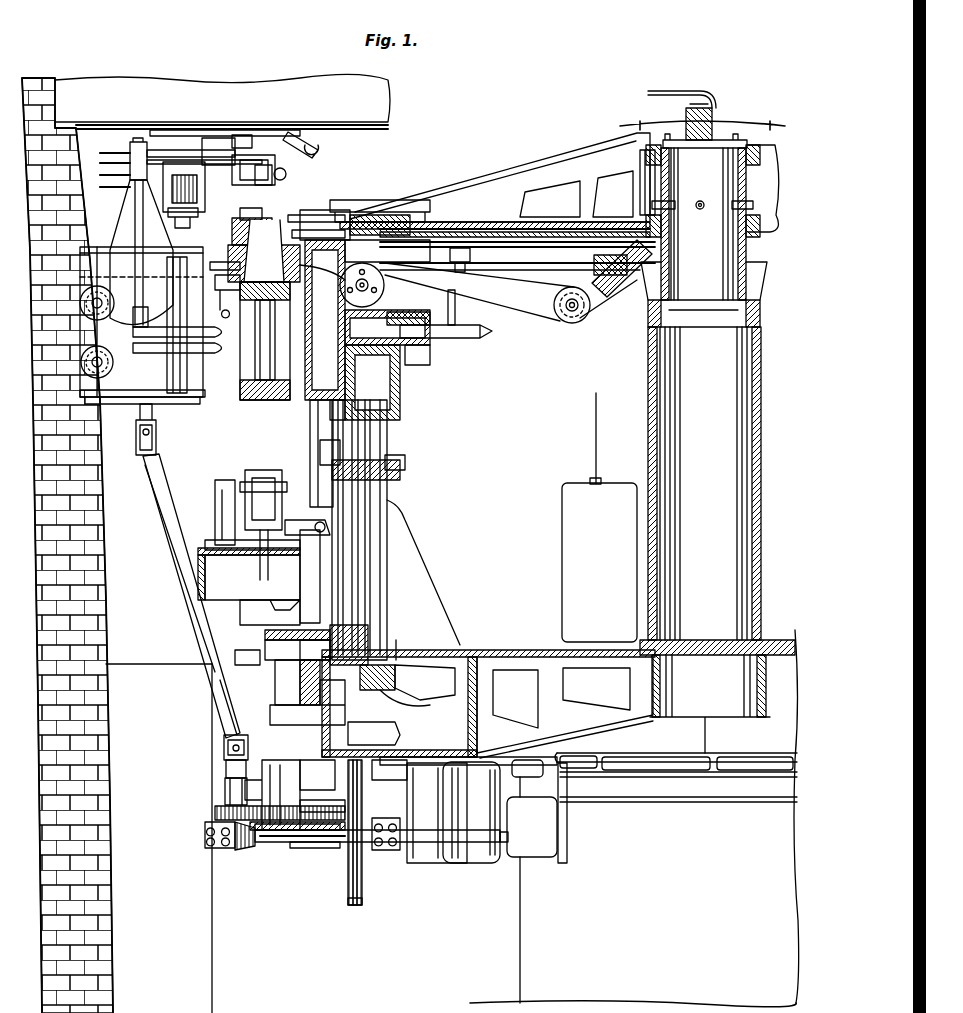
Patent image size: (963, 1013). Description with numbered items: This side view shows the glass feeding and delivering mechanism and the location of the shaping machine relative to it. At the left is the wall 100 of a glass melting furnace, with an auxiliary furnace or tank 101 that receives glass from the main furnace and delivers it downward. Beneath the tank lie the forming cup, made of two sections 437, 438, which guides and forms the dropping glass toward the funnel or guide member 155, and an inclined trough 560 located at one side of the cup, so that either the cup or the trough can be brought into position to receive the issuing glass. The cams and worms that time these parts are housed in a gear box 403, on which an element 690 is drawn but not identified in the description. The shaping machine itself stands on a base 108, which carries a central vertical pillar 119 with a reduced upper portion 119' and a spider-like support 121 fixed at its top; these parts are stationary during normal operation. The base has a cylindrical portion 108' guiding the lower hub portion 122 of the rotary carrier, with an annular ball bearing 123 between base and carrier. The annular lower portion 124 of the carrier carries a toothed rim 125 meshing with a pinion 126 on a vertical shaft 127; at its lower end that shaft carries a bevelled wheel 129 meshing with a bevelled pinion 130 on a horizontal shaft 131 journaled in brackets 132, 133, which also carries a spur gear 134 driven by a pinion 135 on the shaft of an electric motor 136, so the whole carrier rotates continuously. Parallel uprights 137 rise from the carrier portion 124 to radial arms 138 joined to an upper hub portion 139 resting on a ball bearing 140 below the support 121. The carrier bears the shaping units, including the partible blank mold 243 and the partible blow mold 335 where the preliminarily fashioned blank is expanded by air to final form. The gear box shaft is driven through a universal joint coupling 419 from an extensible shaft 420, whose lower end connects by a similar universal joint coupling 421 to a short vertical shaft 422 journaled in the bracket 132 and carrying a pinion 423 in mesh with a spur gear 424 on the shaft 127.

The wall of glass melting furnace 100 is at (105, 925).
The auxiliary furnace or tank 101 is at (222, 101).
The forming cup section 437 is at (290, 172).
The inclined trough 560 is at (245, 195).
The forming cup section 438 is at (195, 238).
The funnel shaped passage 155 is at (260, 228).
The partible blank mold 243 is at (248, 323).
The gear box 403 is at (142, 292).
The handwheel 690 is at (151, 332).
The spider-like support 121 is at (630, 185).
The radial arms 138 is at (532, 263).
The upper hub portion 139 is at (592, 308).
The ball bearing 140 is at (642, 317).
The reduced upper portion of pillar 119' is at (702, 209).
The central vertical pillar 119 is at (704, 483).
The base 108 is at (560, 813).
The cylindrical portion of base 108' is at (422, 715).
The parallel uprights 137 is at (368, 532).
The annular lower portion of carrier 124 is at (352, 650).
The partible blow mold 335 is at (262, 490).
The pinion 126 is at (272, 668).
The vertical shaft 127 is at (275, 688).
The rim 125 is at (300, 690).
The lower hub portion of carrier 122 is at (385, 680).
The annular ball bearing 123 is at (374, 733).
The universal joint coupling 419 is at (156, 430).
The extensible shaft 420 is at (158, 490).
The universal joint coupling 421 is at (224, 735).
The short vertical shaft 422 is at (226, 768).
The bracket 132 is at (225, 794).
The pinion 423 is at (215, 812).
The bevelled pinion 130 is at (245, 850).
The bevelled wheel 129 is at (318, 842).
The horizontal shaft 131 is at (305, 845).
The pinion 135 is at (346, 850).
The spur gear 134 is at (356, 904).
The bracket 133 is at (378, 852).
The electric motor 136 is at (425, 840).
The spur gear 424 is at (307, 810).